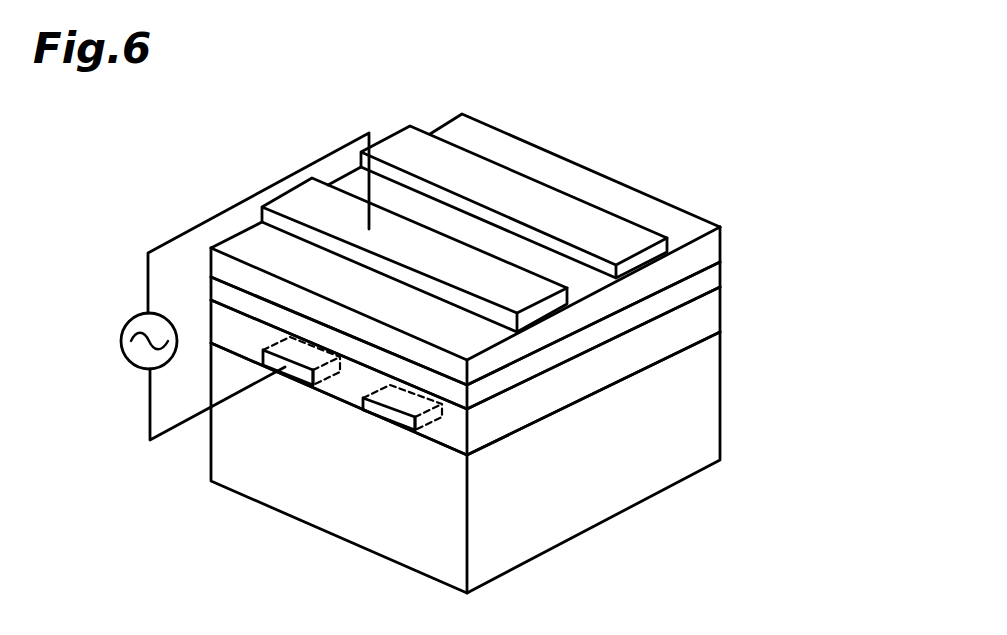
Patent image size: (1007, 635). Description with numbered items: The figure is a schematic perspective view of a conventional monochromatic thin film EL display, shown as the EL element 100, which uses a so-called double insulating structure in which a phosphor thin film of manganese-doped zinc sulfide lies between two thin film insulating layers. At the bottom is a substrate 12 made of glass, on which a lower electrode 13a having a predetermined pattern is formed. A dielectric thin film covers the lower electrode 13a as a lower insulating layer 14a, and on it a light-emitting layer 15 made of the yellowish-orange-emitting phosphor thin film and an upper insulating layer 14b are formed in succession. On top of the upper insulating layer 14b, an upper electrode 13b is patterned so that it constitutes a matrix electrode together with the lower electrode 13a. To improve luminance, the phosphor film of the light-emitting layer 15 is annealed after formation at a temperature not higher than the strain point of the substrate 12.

The EL element 100 is at (511, 312).
The substrate 12 is at (710, 417).
The lower electrode 13a is at (400, 423).
The upper electrode 13b is at (580, 225).
The lower insulating layer 14a is at (707, 312).
The upper insulating layer 14b is at (707, 253).
The light-emitting layer 15 is at (707, 283).